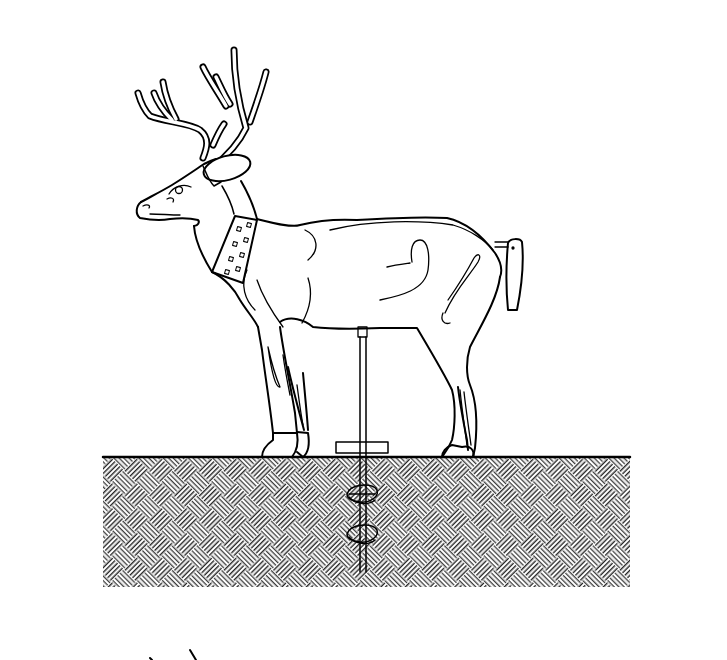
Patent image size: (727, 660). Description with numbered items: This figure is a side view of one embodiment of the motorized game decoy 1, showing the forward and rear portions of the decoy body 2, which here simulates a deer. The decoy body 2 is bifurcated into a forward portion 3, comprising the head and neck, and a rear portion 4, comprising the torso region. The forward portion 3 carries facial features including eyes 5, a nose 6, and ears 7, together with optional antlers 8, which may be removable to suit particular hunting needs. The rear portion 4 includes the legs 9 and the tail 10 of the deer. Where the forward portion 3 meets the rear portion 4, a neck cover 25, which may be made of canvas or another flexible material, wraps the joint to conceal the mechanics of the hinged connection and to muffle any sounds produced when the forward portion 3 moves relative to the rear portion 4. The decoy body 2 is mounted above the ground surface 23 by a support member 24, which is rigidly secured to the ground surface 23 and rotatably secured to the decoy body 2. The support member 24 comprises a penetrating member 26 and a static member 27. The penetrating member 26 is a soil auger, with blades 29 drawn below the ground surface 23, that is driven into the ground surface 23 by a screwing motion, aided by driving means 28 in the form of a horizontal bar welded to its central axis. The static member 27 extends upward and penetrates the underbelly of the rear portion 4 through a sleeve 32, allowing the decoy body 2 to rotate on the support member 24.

The decoy 1 is at (80, 50).
The decoy body 2 is at (360, 162).
The forward portion 3 is at (190, 242).
The rear portion 4 is at (448, 218).
The eyes 5 is at (181, 184).
The nose 6 is at (139, 207).
The ears 7 is at (253, 160).
The antlers 8 is at (233, 50).
The legs 9 is at (268, 390).
The tail 10 is at (519, 241).
The ground surface 23 is at (178, 456).
The support member 24 is at (349, 367).
The neck cover 25 is at (248, 216).
The penetrating member 26 is at (344, 489).
The static member 27 is at (370, 356).
The driving means 28 is at (369, 441).
The auger blade 29 is at (372, 469).
The sleeve 32 is at (357, 332).